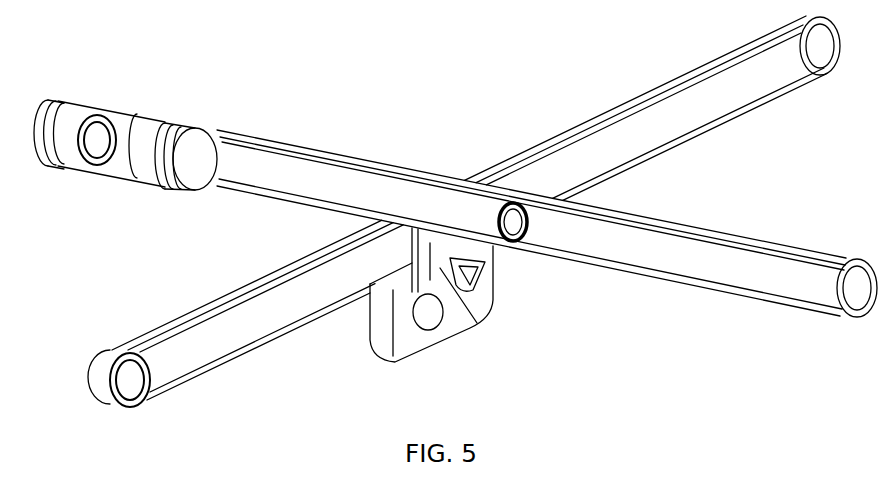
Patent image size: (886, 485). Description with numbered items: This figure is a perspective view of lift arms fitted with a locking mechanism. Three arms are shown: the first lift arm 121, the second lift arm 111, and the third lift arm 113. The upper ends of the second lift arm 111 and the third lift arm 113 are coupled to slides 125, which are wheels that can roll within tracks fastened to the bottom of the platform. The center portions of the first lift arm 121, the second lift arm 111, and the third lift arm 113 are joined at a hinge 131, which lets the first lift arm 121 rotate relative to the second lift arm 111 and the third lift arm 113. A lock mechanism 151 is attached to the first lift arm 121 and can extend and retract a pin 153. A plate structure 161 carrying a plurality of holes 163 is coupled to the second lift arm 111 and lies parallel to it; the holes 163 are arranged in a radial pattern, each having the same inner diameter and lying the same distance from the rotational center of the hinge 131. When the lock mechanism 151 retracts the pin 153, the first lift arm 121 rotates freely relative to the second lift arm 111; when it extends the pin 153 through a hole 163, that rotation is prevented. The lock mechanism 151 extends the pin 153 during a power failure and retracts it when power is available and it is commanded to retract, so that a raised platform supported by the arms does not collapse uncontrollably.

The second lift arm 111 is at (260, 183).
The third lift arm 113 is at (130, 113).
The slides 125 is at (43, 102).
The first lift arm 121 is at (663, 100).
The hinge 131 is at (507, 210).
The lock mechanism 151 is at (397, 342).
The pin 153 is at (455, 297).
The plate structure 161 is at (490, 272).
The holes 163 is at (440, 267).